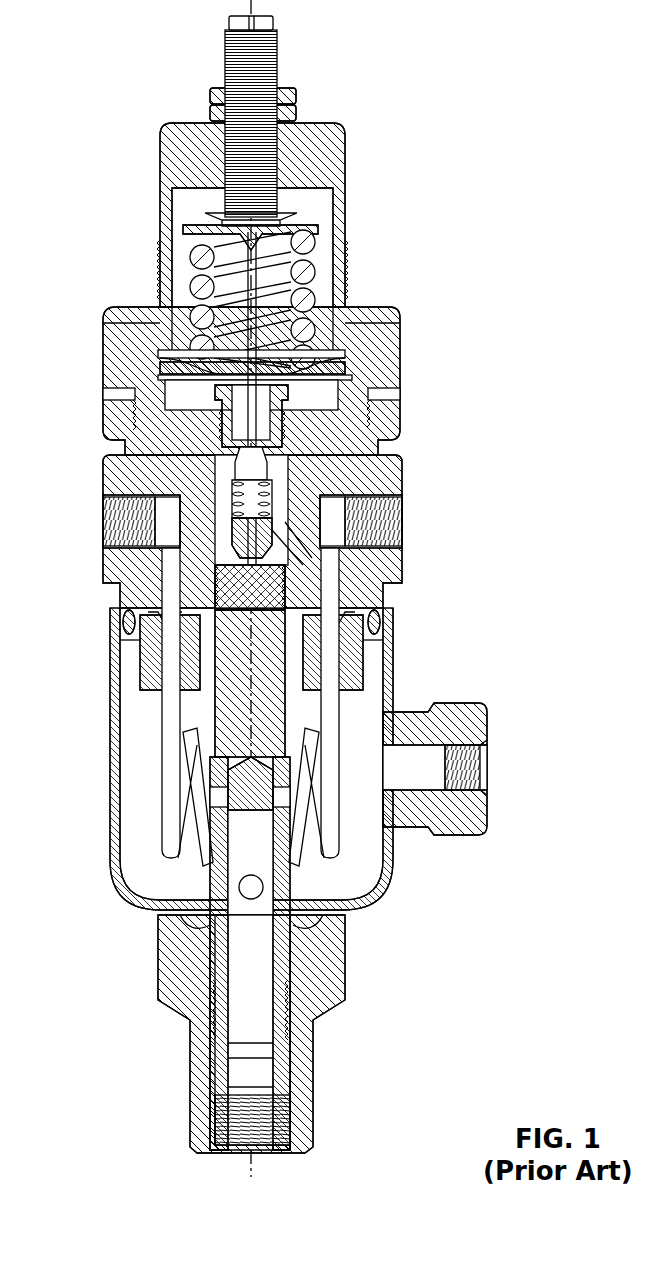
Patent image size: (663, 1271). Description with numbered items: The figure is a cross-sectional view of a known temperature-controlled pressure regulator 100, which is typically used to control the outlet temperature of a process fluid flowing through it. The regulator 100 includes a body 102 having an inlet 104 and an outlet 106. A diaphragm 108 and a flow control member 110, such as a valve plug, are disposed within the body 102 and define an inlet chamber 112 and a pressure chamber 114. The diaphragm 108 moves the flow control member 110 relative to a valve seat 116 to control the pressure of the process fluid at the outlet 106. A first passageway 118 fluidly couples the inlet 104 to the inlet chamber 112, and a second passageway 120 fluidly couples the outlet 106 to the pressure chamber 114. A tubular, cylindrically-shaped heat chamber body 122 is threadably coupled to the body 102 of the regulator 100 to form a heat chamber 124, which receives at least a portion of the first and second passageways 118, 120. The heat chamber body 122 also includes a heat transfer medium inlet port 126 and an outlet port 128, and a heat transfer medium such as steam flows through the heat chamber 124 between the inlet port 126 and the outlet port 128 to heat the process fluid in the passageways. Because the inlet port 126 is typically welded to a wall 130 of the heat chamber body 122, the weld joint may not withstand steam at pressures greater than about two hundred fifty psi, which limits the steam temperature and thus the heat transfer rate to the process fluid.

The temperature-controlled pressure regulator 100 is at (172, 33).
The body 102 is at (371, 307).
The inlet 104 is at (400, 517).
The outlet 106 is at (108, 517).
The diaphragm 108 is at (352, 366).
The flow control member 110 is at (258, 468).
The inlet chamber 112 is at (213, 446).
The pressure chamber 114 is at (237, 458).
The valve seat 116 is at (178, 394).
The first passageway 118 is at (333, 717).
The second passageway 120 is at (160, 733).
The heat chamber body 122 is at (388, 652).
The heat chamber 124 is at (350, 892).
The heat transfer medium inlet port 126 is at (462, 703).
The outlet port 128 is at (265, 1155).
The wall 130 is at (117, 768).